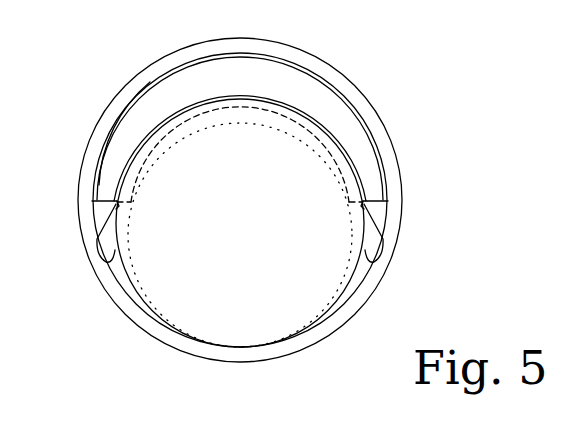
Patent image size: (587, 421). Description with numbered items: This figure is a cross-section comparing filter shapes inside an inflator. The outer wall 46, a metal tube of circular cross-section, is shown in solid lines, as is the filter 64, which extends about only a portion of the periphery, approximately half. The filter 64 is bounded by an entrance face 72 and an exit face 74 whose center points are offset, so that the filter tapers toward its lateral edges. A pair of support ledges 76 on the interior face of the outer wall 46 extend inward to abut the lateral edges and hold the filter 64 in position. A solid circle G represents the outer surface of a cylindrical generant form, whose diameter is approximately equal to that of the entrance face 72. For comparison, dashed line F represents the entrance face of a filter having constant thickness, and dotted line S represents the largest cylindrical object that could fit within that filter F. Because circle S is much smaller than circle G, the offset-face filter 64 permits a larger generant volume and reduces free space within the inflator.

The outer wall 46 is at (392, 143).
The filter 64 is at (322, 81).
The exit face 74 is at (128, 108).
The entrance face 72 is at (132, 153).
The support ledges 76 is at (106, 256).
The circle S is at (128, 255).
The entrance face of constant-thickness filter F is at (334, 157).
The circle G is at (345, 277).